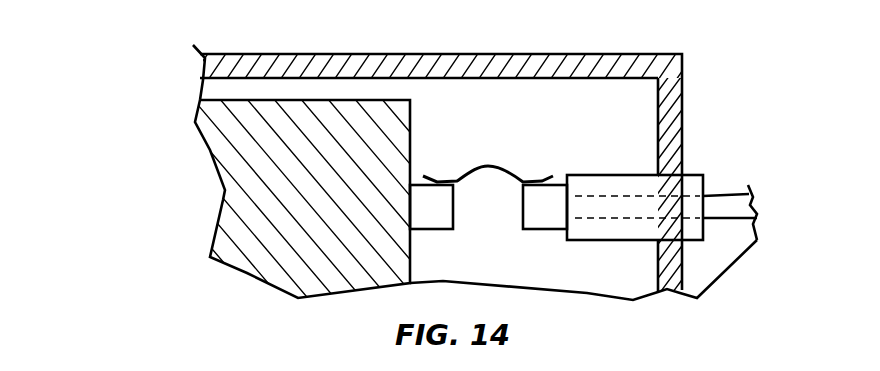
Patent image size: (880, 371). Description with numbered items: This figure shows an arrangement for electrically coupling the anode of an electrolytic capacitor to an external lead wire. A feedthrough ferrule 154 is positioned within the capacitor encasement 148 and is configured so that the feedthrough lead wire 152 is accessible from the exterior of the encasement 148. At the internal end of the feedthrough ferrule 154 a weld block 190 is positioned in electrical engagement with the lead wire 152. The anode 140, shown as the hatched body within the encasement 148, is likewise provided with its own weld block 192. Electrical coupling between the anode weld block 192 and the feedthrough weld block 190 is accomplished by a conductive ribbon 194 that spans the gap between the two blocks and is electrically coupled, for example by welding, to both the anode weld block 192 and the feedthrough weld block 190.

The anode 140 is at (273, 143).
The encasement 148 is at (352, 53).
The feedthrough lead wire 152 is at (723, 210).
The feedthrough ferrule 154 is at (707, 178).
The weld block 190 is at (550, 220).
The weld block 192 is at (437, 222).
The conductive ribbon 194 is at (490, 163).